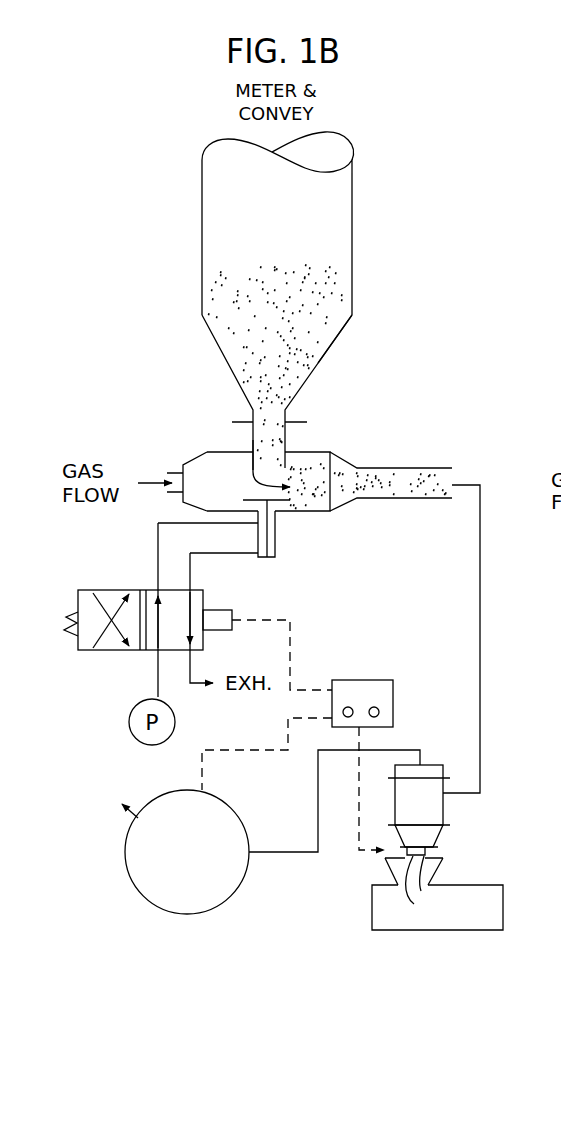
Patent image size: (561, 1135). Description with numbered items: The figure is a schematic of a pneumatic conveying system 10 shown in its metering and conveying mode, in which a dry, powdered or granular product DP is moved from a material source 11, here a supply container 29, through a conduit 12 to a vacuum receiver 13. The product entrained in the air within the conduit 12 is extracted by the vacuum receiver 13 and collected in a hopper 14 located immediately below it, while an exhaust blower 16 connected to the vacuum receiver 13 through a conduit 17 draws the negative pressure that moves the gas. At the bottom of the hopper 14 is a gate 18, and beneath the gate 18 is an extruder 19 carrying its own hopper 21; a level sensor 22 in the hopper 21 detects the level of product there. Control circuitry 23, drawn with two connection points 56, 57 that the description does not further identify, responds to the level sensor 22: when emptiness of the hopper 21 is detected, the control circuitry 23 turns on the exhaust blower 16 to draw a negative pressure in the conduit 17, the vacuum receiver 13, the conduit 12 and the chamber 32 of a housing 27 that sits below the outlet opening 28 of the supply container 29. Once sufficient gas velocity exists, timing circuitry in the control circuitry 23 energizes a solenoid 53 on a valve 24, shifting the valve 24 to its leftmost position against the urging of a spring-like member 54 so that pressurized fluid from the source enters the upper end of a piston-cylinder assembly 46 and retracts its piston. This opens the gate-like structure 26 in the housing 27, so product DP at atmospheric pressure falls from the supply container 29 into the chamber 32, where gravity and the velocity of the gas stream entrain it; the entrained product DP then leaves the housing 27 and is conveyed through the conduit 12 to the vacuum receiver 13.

The pneumatic conveying system 10 is at (332, 442).
The material source 11 is at (199, 251).
The conduit 12 is at (470, 482).
The vacuum receiver 13 is at (454, 806).
The hopper 14 is at (432, 836).
The exhaust blower 16 is at (238, 880).
The conduit 17 is at (318, 800).
The gate 18 is at (418, 904).
The extruder 19 is at (469, 884).
The hopper 21 is at (430, 873).
The level sensor 22 is at (397, 866).
The control circuitry 23 is at (385, 698).
The valve 24 is at (205, 589).
The gate-like structure 26 is at (281, 503).
The housing 27 is at (211, 449).
The outlet opening 28 is at (276, 412).
The supply container 29 is at (336, 345).
The chamber 32 is at (228, 462).
The piston-cylinder assembly 46 is at (278, 542).
The solenoid 53 is at (224, 618).
The spring-like member 54 is at (55, 604).
The terminal 56 is at (346, 718).
The terminal 57 is at (378, 717).
The dry, powdered and/or granular product DP is at (330, 308).